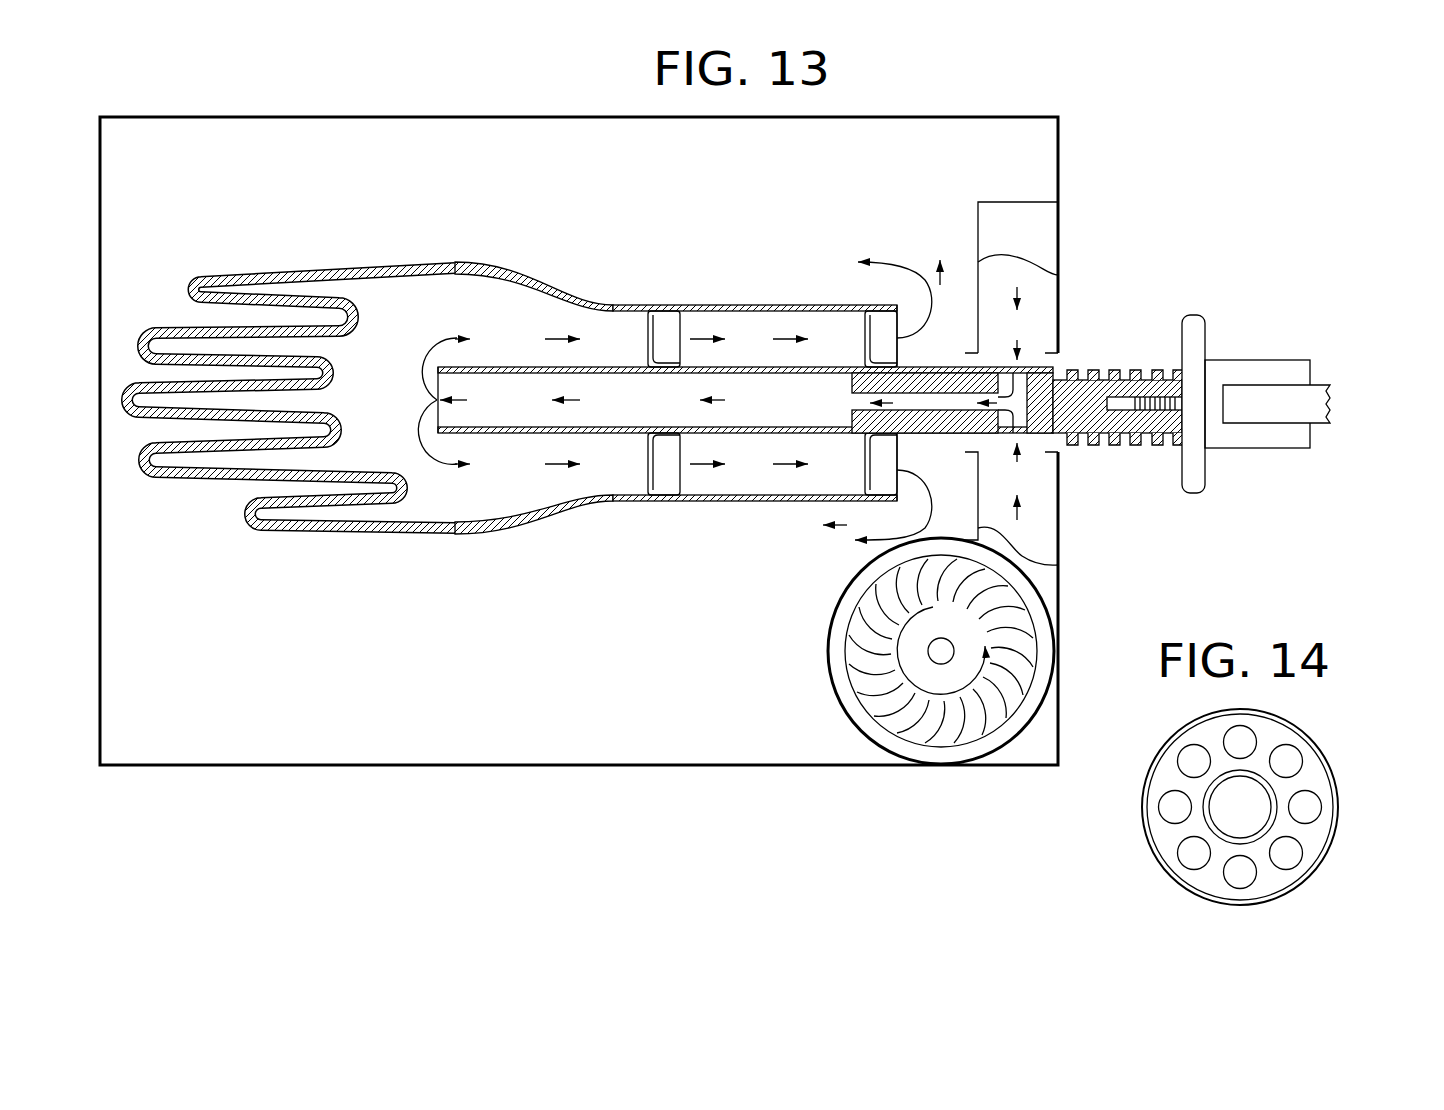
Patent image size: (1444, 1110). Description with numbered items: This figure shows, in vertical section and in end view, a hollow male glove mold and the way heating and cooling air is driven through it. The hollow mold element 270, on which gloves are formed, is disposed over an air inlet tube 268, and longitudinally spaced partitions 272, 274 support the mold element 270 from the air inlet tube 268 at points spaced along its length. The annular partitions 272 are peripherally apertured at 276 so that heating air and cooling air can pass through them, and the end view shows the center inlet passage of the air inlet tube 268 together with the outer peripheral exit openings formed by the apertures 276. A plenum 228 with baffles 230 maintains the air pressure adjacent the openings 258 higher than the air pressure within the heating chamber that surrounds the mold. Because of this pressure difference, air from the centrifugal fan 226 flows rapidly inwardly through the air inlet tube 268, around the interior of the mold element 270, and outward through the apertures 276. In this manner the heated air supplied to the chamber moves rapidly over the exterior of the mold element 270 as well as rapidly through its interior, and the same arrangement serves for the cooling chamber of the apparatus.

In FIG. 13, the centrifugal fan 226 is at (908, 733).
In FIG. 13, the plenum 228 is at (1038, 508).
In FIG. 13, the baffles 230 is at (1058, 275).
In FIG. 13, the openings 258 is at (1023, 437).
In FIG. 13, the air inlet tube 268 is at (500, 367).
In FIG. 14, the air inlet tube 268 is at (1215, 822).
In FIG. 13, the hollow mold element 270 is at (746, 305).
In FIG. 13, the annular partition 272 is at (672, 326).
In FIG. 13, the partition 274 is at (860, 318).
In FIG. 14, the partition 274 is at (1163, 870).
In FIG. 13, the apertures 276 is at (648, 337).
In FIG. 14, the apertures 276 is at (1308, 812).